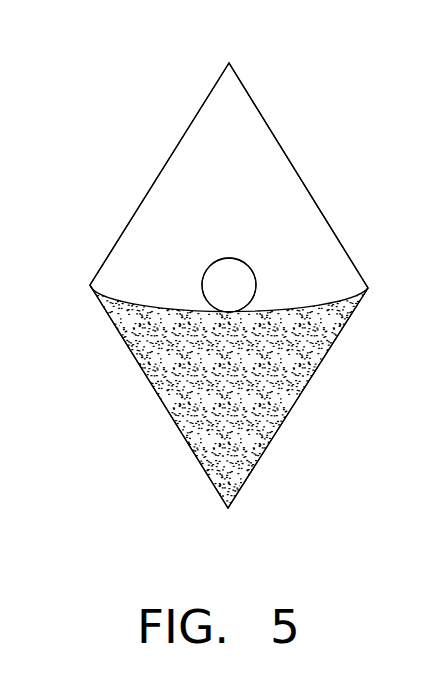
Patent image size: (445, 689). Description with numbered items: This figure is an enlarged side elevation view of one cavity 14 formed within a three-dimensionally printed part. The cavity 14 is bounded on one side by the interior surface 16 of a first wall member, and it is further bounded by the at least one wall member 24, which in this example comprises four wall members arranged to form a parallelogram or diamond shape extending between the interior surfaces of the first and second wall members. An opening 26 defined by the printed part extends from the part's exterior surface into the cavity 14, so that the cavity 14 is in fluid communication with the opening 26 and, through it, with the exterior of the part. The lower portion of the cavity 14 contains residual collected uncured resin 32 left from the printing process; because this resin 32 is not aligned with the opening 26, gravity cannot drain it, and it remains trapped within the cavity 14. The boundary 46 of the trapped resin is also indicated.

The interior surface of first wall member 16 is at (230, 102).
The cavity 14 is at (237, 183).
The wall member 24 is at (146, 195).
The opening 26 is at (232, 278).
The boundary line 46 is at (204, 277).
The residual collected uncured resin 32 is at (254, 422).